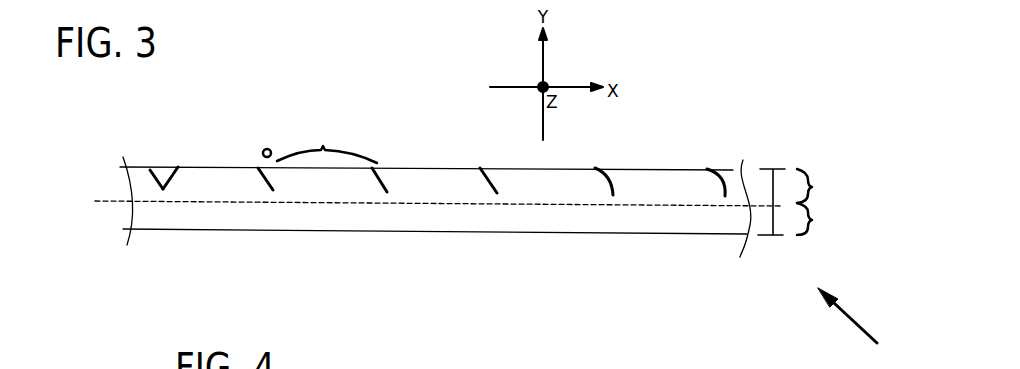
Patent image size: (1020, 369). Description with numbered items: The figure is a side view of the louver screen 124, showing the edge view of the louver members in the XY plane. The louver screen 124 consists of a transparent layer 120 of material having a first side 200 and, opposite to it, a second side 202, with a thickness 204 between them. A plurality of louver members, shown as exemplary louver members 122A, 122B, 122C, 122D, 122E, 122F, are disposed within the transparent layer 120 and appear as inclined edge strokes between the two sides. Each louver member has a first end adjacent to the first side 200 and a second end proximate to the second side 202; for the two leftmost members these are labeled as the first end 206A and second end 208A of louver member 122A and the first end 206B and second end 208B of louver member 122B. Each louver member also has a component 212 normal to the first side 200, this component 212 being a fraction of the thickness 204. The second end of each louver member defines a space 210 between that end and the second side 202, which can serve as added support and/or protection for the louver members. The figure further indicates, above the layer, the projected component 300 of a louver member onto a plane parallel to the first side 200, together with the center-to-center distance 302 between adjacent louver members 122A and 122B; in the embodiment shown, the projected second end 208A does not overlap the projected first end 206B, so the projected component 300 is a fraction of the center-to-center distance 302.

The transparent layer 120 is at (590, 226).
The louver member 122A is at (125, 167).
The louver member 122B is at (288, 185).
The louver member 122C is at (401, 185).
The louver member 122D is at (511, 186).
The louver member 122E is at (625, 186).
The louver member 122F is at (701, 186).
The louver screen 124 is at (854, 327).
The first side 200 is at (725, 170).
The second side 202 is at (745, 235).
The thickness 204 is at (780, 233).
The first end 206A is at (150, 170).
The first end 206B is at (258, 168).
The second end 208A is at (178, 167).
The second end 208B is at (273, 190).
The space 210 is at (823, 219).
The component 212 is at (823, 186).
The projected component 300 is at (258, 168).
The center-to-center distance 302 is at (327, 144).